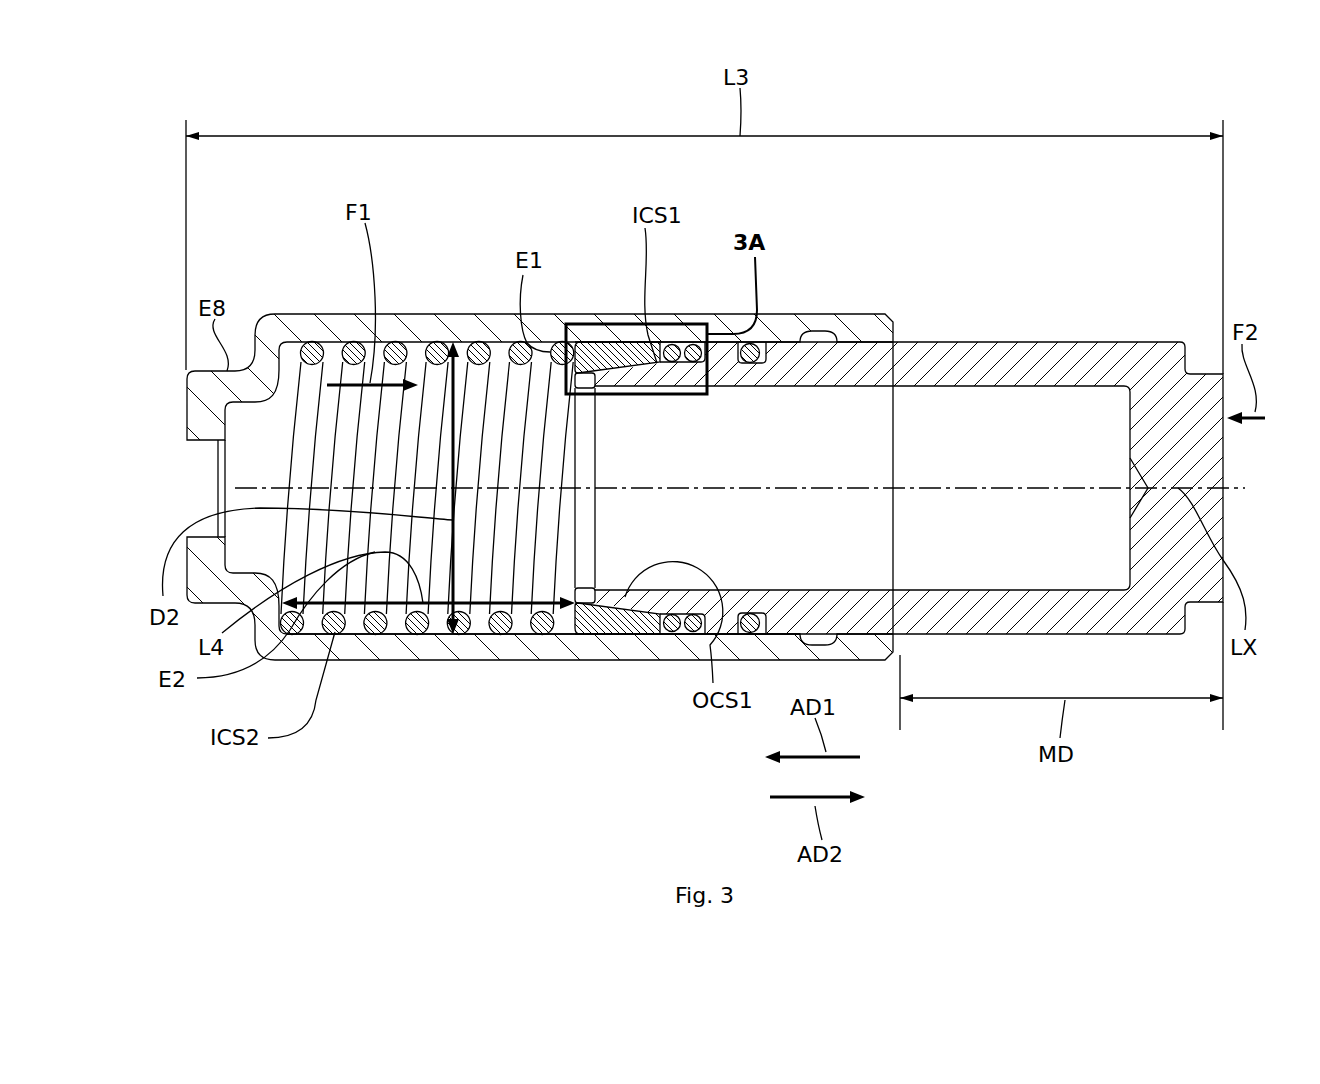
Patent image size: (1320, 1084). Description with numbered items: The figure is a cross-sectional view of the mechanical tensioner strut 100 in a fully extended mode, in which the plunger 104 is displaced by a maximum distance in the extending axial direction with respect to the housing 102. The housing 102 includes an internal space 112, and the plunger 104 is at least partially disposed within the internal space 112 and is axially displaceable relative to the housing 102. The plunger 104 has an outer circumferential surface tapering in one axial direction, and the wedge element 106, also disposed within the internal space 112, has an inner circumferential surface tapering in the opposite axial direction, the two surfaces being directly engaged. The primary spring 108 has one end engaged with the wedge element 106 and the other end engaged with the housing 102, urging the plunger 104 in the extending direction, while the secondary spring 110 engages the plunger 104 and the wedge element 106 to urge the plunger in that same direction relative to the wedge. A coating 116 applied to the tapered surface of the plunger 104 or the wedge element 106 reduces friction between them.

The mechanical tensioner strut 100 is at (1105, 243).
The housing 102 is at (313, 314).
The plunger 104 is at (1030, 333).
The wedge element 106 is at (605, 333).
The primary spring 108 is at (400, 645).
The secondary spring 110 is at (693, 345).
The internal space 112 is at (572, 628).
The coating 116 is at (592, 343).